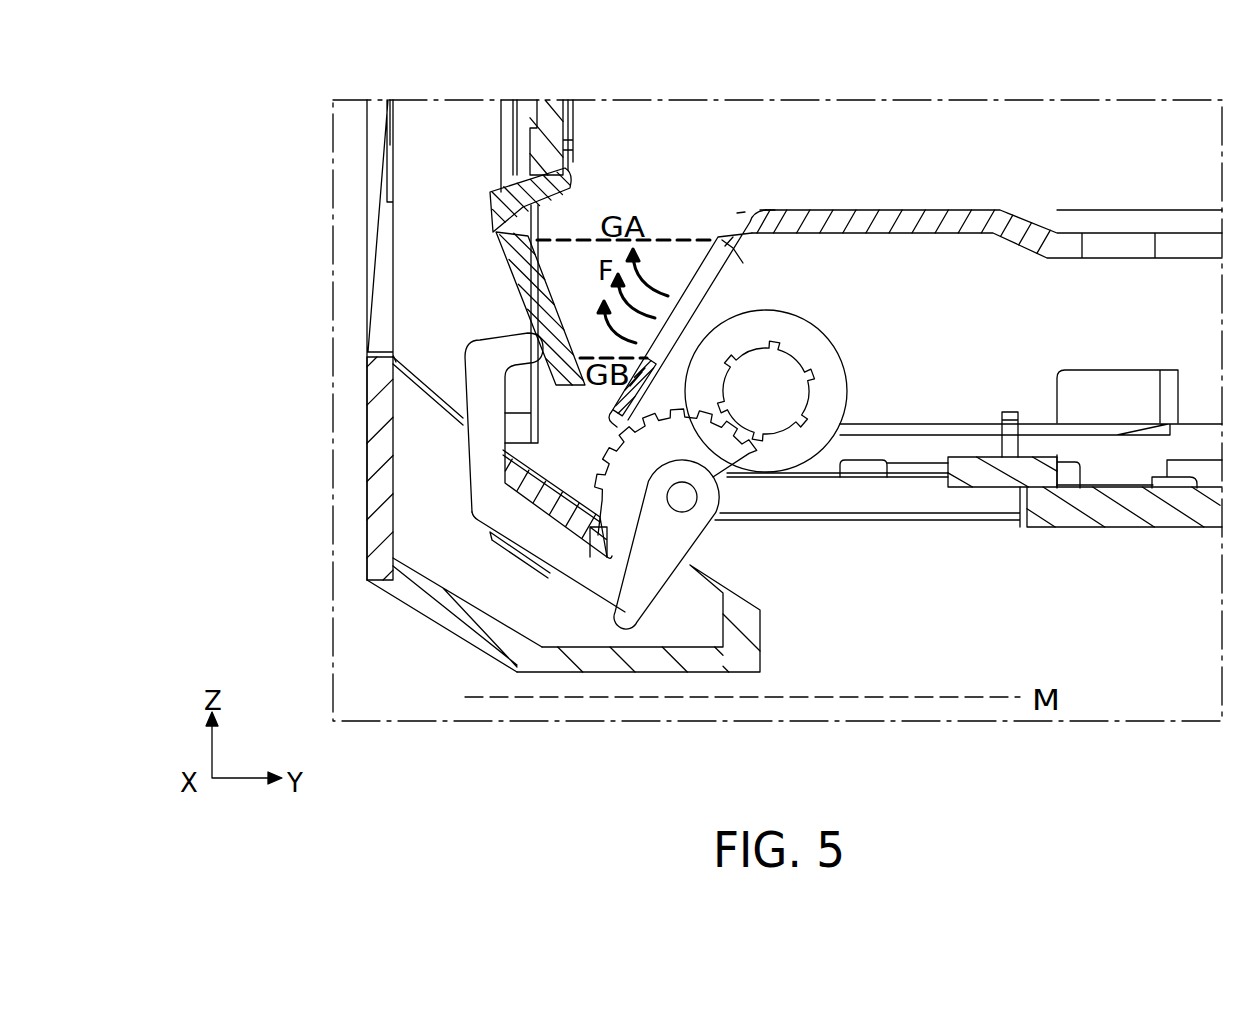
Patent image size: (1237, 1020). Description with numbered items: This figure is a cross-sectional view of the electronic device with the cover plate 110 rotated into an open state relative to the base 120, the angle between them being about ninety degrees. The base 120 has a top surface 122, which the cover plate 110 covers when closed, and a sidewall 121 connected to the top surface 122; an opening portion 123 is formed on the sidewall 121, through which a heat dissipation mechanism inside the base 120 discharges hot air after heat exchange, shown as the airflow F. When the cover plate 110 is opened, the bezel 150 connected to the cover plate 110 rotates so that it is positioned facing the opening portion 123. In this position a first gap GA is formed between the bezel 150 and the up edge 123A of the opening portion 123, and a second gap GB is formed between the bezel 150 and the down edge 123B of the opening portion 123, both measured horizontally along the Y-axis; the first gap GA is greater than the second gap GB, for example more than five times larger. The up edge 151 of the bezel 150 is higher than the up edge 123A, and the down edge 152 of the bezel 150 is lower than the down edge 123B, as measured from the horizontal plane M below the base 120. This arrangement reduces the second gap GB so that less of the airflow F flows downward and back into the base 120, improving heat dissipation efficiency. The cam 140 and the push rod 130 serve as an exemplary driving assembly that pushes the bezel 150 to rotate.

The cover plate 110 is at (380, 212).
The base 120 is at (933, 498).
The sidewall 121 is at (742, 228).
The top surface 122 is at (887, 223).
The opening portion 123 is at (721, 262).
The up edge of the opening portion 123A is at (722, 243).
The down edge of the opening portion 123B is at (640, 383).
The push rod 130 is at (623, 600).
The cam 140 is at (782, 410).
The bezel 150 is at (545, 303).
The up edge of the bezel 151 is at (523, 205).
The down edge of the bezel 152 is at (585, 392).